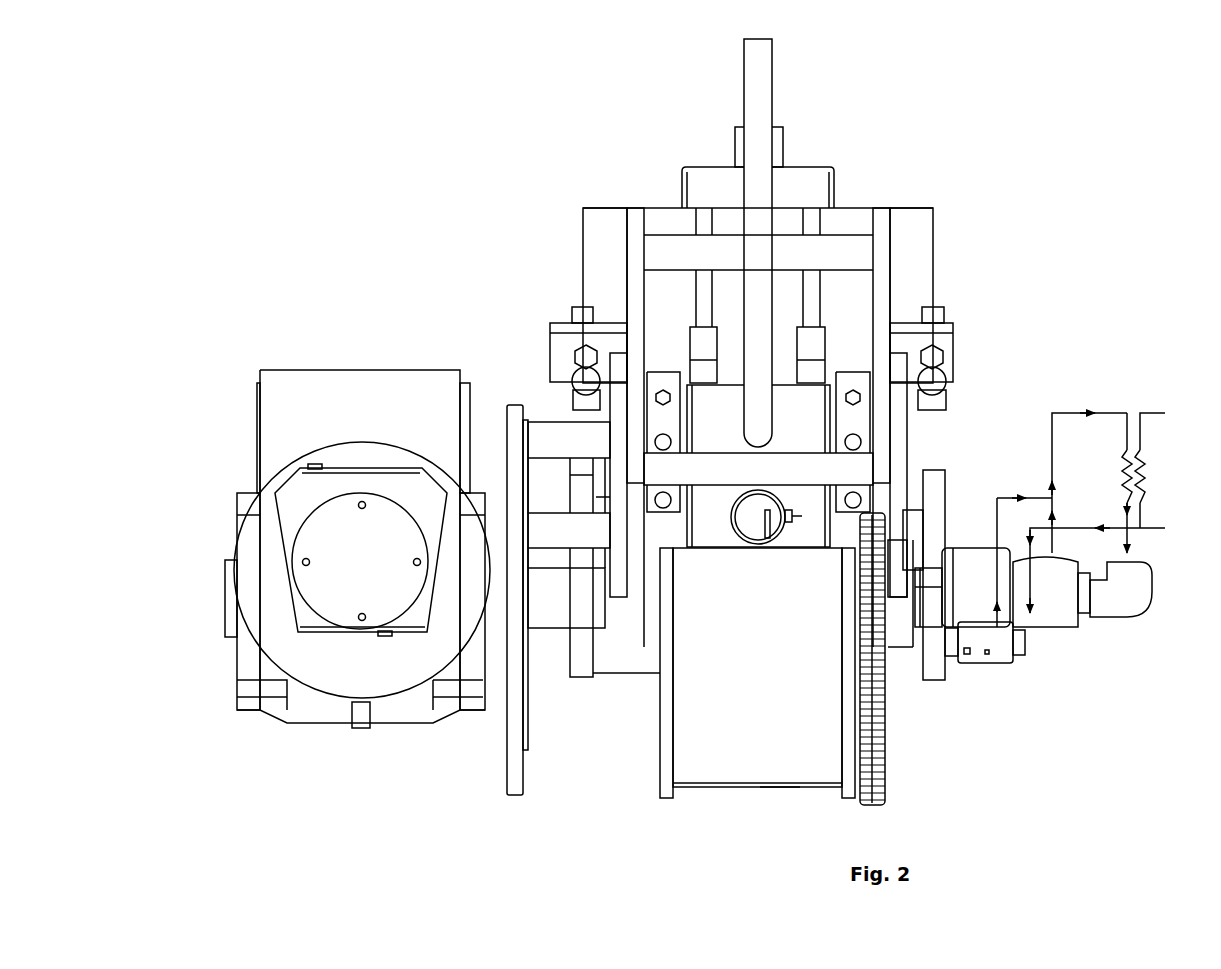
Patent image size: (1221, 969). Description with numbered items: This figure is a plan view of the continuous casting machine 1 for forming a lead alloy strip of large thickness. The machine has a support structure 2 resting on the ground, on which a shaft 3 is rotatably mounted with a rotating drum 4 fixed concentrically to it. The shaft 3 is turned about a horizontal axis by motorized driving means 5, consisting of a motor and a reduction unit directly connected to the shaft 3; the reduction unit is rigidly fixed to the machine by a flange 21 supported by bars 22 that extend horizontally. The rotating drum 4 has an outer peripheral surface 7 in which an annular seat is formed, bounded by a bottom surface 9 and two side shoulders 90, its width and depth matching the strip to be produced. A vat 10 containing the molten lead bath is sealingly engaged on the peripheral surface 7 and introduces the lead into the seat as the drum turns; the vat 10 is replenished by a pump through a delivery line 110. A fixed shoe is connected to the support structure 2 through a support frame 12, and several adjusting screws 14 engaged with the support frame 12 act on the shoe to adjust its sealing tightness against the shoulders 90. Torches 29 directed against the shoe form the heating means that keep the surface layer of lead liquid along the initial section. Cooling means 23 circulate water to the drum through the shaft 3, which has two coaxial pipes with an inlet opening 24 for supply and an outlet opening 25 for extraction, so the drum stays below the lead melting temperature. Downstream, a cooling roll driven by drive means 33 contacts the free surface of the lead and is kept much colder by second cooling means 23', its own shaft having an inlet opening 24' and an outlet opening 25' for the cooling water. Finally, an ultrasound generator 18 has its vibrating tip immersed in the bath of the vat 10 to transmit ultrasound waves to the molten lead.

The continuous casting machine 1 is at (820, 367).
The support structure 2 is at (585, 668).
The shaft 3 is at (932, 605).
The rotating drum 4 is at (745, 670).
The motorized driving means 5 is at (214, 446).
The outer peripheral surface 7 is at (778, 802).
The bottom surface 9 is at (760, 788).
The vat 10 is at (810, 425).
The support frame 12 is at (660, 420).
The adjusting screws 14 is at (661, 390).
The ultrasound generator 18 is at (770, 510).
The flange 21 is at (513, 760).
The bars 22 is at (580, 528).
The cooling means 23 is at (1090, 466).
The second cooling means 23' is at (1047, 613).
The inlet opening 24 is at (1149, 578).
The inlet opening 24' is at (1028, 603).
The outlet opening 25 is at (1082, 607).
The outlet opening 25' is at (1026, 652).
The torches 29 is at (812, 330).
The drive means 33 is at (908, 741).
The side shoulders 90 is at (660, 775).
The delivery line 110 is at (760, 167).